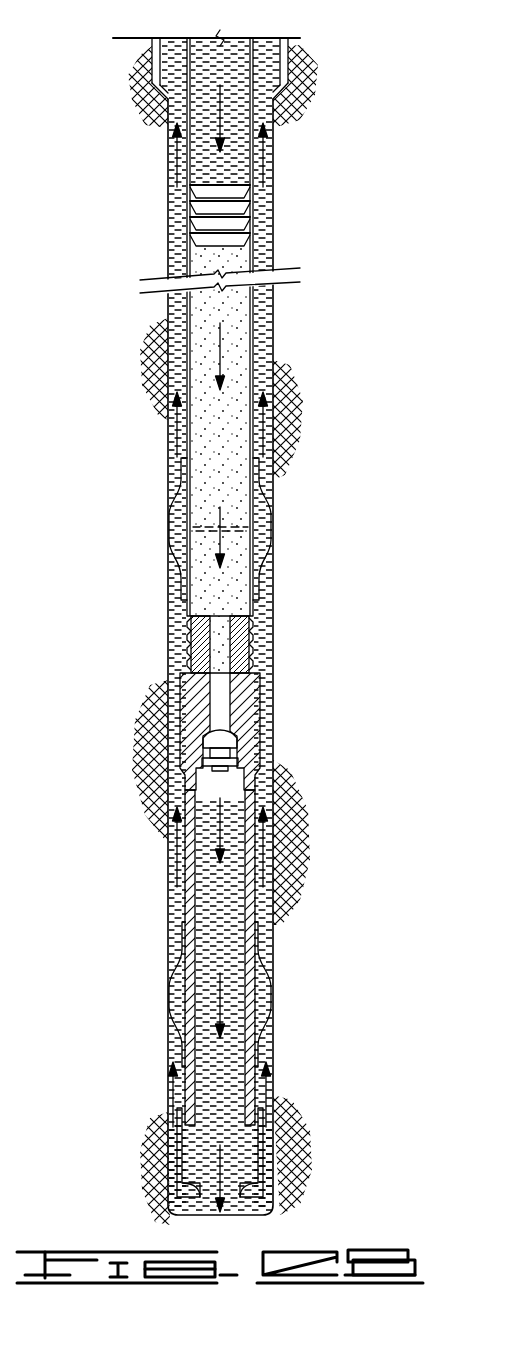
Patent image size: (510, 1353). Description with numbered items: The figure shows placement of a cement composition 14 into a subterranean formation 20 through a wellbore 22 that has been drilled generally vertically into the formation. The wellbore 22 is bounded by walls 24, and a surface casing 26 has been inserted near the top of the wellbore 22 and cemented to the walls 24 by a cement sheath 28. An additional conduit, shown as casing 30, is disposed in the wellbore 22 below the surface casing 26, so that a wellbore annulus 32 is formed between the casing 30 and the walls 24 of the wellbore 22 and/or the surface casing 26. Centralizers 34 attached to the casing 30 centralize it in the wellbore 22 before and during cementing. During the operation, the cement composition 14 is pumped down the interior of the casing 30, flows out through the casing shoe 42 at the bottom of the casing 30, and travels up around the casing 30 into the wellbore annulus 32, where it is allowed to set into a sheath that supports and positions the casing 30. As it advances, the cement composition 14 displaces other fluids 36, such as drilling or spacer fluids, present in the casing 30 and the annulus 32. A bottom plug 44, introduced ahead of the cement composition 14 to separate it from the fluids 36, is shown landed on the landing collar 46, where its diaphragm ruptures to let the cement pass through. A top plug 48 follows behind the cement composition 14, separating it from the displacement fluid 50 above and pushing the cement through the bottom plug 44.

The cement composition 14 is at (222, 333).
The subterranean formation 20 is at (446, 626).
The wellbore 22 is at (296, 488).
The walls 24 is at (270, 220).
The surface casing 26 is at (305, 62).
The cement sheath 28 is at (281, 98).
The casing 30 is at (185, 365).
The wellbore annulus 32 is at (175, 585).
The centralizers 34 is at (265, 967).
The fluids 36 is at (218, 818).
The casing shoe 42 is at (178, 1162).
The bottom plug 44 is at (190, 647).
The landing collar 46 is at (257, 743).
The top plug 48 is at (193, 227).
The displacement fluid 50 is at (200, 82).